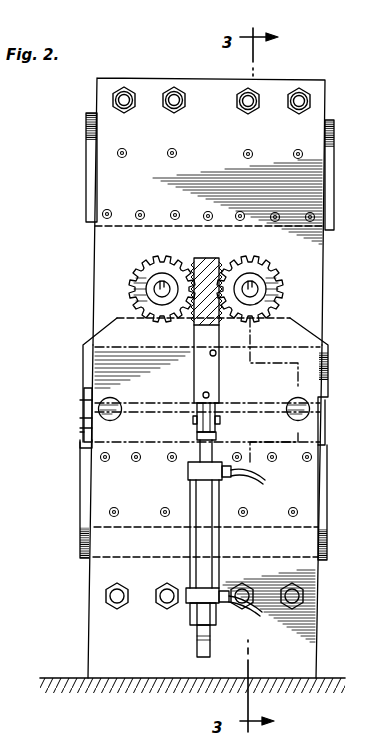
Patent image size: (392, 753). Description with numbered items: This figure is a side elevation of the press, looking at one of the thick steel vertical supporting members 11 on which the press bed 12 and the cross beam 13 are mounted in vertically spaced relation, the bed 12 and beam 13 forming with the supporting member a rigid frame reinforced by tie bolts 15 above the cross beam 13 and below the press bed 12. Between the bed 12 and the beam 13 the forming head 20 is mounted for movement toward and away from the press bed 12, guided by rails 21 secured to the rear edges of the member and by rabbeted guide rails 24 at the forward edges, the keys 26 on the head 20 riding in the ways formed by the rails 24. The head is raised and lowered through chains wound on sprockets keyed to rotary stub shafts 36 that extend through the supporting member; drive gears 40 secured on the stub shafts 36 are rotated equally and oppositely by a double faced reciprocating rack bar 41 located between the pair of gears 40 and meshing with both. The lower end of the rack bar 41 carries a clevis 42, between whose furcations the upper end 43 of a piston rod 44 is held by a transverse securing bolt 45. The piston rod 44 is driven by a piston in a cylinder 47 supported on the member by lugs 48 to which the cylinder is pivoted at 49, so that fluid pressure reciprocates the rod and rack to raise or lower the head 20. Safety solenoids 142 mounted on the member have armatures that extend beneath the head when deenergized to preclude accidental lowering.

The vertical supporting member 11 is at (110, 180).
The press bed 12 is at (327, 510).
The cross beam 13 is at (334, 173).
The tie bolts 15 is at (124, 100).
The forming head 20 is at (336, 364).
The rails 21 is at (325, 411).
The rabbeted guide rails 24 is at (84, 414).
The keys 26 is at (85, 384).
The safety solenoids 142 is at (110, 418).
The rotary stub shafts 36 is at (148, 300).
The drive gears 40 is at (160, 243).
The double faced reciprocating rack bar 41 is at (194, 338).
The clevis 42 is at (220, 430).
The upper end of piston rod 43 is at (195, 430).
The piston rod 44 is at (200, 452).
The transverse securing bolt 45 is at (196, 412).
The cylinders 47 is at (190, 548).
The lugs 48 is at (198, 642).
The pivot 49 is at (190, 618).